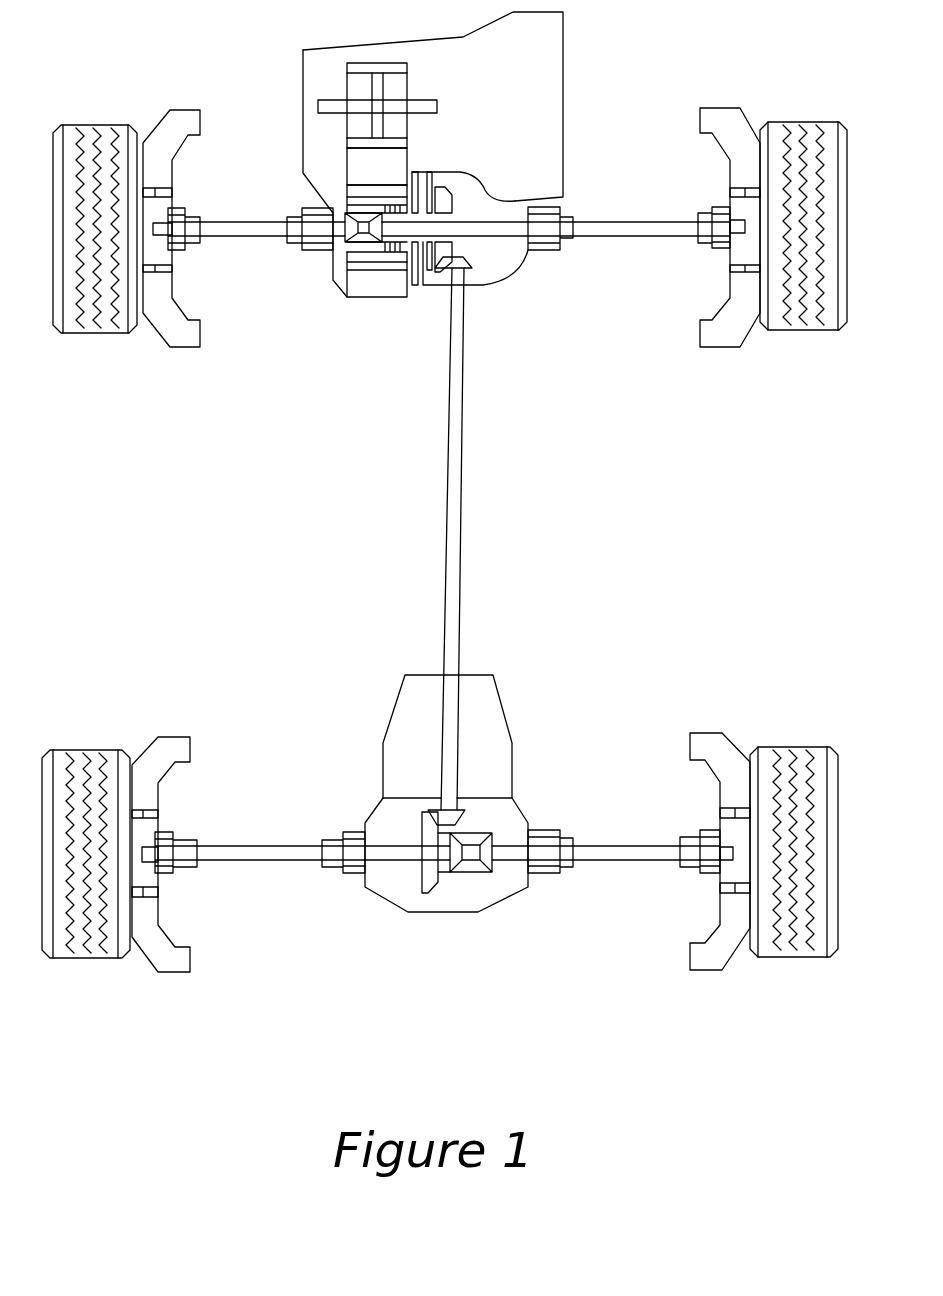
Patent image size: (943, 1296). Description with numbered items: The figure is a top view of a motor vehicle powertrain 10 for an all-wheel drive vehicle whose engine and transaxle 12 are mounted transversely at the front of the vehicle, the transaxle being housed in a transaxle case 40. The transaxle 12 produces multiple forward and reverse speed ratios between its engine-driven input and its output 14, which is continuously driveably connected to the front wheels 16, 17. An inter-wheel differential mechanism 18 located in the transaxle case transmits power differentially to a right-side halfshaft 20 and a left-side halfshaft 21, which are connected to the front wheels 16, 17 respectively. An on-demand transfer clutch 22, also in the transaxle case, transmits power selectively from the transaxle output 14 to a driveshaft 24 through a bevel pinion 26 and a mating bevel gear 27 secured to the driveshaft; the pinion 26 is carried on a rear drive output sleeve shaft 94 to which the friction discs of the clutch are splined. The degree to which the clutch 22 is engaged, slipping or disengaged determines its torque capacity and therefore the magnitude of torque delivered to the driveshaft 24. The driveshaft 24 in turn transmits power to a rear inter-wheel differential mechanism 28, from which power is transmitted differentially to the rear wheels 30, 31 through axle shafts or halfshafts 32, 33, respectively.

The motor vehicle powertrain 10 is at (627, 492).
The transaxle 12 is at (551, 57).
The transaxle output 14 is at (357, 192).
The front wheel 16 is at (793, 122).
The front wheel 17 is at (110, 127).
The inter-wheel differential mechanism 18 is at (352, 243).
The right-side halfshaft 20 is at (622, 221).
The left-side halfshaft 21 is at (248, 222).
The on-demand transfer clutch 22 is at (388, 247).
The driveshaft 24 is at (455, 517).
The bevel pinion 26 is at (440, 259).
The bevel gear 27 is at (463, 268).
The rear inter-wheel differential mechanism 28 is at (451, 884).
The rear wheel 30 is at (782, 748).
The rear wheel 31 is at (98, 750).
The halfshaft 32 is at (612, 846).
The halfshaft 33 is at (237, 845).
The transaxle case 40 is at (302, 93).
The rear drive output sleeve shaft 94 is at (432, 190).